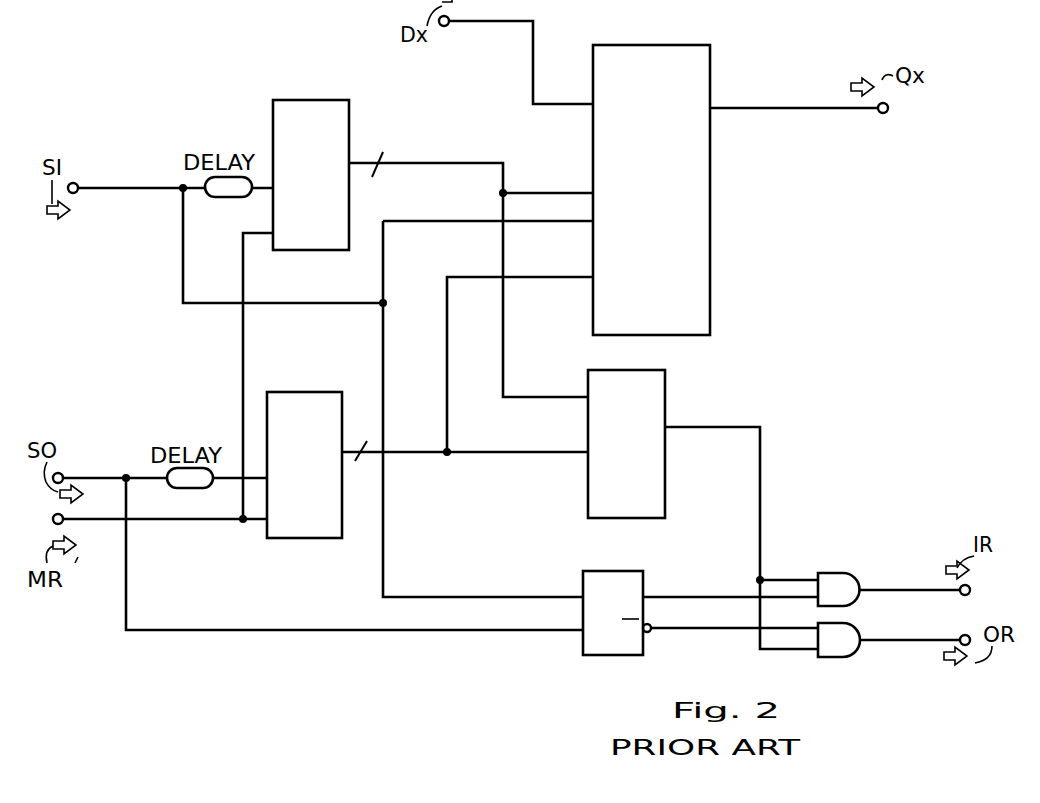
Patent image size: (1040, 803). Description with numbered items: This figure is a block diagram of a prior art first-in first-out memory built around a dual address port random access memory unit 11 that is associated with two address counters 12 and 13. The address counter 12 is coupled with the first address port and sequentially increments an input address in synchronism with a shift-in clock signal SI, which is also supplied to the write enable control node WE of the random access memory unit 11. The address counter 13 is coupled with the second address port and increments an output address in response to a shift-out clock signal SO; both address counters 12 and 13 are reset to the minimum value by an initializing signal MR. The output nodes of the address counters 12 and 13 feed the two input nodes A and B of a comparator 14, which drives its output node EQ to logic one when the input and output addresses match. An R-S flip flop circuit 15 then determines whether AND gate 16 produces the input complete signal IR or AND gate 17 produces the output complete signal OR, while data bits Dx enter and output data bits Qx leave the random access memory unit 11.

The dual address port random access memory unit 11 is at (686, 45).
The address counter 12 is at (306, 100).
The address counter 13 is at (295, 392).
The comparator 14 is at (655, 371).
The R-S flip flop circuit 15 is at (643, 580).
The AND gate 16 is at (836, 573).
The AND gate 17 is at (843, 657).